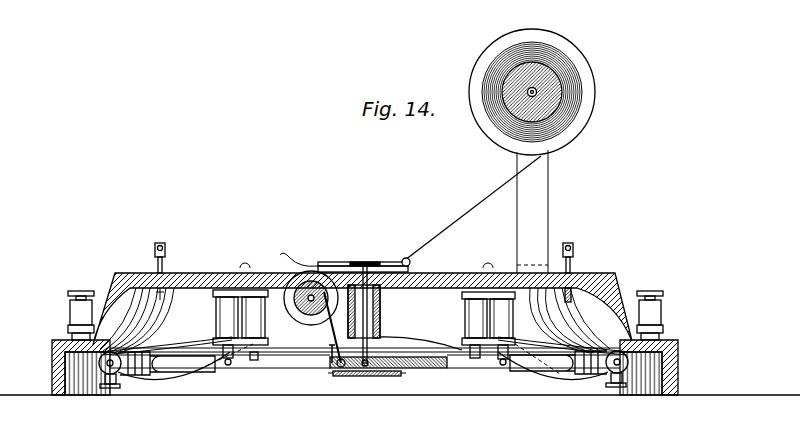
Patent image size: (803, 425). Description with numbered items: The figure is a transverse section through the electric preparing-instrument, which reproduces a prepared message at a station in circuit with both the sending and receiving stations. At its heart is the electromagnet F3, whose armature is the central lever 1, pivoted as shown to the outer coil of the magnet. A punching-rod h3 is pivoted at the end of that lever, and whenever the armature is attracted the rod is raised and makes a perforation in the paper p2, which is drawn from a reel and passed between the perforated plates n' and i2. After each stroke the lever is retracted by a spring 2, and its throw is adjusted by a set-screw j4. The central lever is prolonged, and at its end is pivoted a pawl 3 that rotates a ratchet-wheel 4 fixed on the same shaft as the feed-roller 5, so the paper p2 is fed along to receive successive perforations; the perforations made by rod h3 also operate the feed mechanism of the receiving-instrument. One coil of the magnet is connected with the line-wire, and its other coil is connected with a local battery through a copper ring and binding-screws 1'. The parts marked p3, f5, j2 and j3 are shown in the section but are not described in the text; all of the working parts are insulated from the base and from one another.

The spool / drum p3 is at (532, 92).
The paper p2 is at (473, 208).
The perforated plate n' is at (345, 258).
The perforated plate i2 is at (383, 291).
The punching-rod h3 is at (385, 312).
The spring 2 is at (421, 341).
The ratchet-wheel 4 is at (311, 299).
The pawl 3 is at (333, 329).
The feed-roller 5 is at (320, 345).
The lever 1 is at (365, 360).
The binding-screw 1' is at (363, 369).
The magnet F3 is at (364, 314).
The set-screw j4 is at (370, 272).
The binding post f5 is at (700, 343).
The roller j2 is at (99, 363).
The roller j3 is at (574, 369).